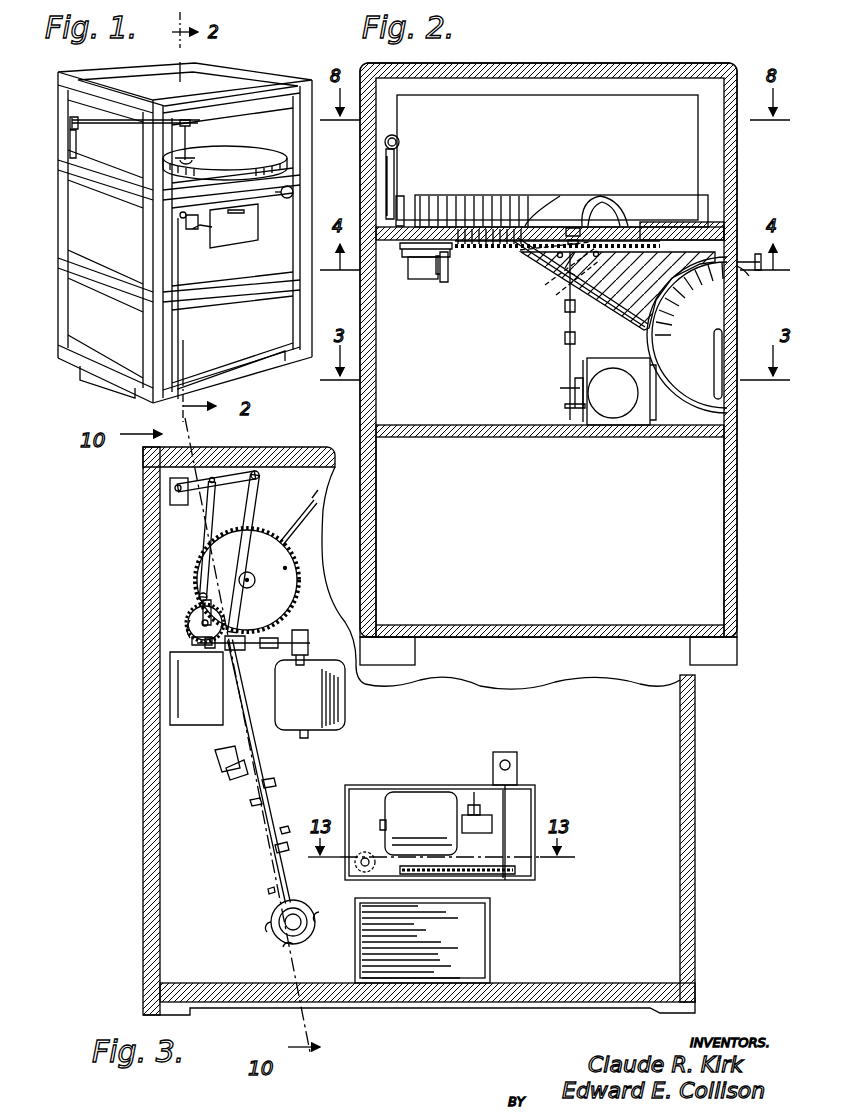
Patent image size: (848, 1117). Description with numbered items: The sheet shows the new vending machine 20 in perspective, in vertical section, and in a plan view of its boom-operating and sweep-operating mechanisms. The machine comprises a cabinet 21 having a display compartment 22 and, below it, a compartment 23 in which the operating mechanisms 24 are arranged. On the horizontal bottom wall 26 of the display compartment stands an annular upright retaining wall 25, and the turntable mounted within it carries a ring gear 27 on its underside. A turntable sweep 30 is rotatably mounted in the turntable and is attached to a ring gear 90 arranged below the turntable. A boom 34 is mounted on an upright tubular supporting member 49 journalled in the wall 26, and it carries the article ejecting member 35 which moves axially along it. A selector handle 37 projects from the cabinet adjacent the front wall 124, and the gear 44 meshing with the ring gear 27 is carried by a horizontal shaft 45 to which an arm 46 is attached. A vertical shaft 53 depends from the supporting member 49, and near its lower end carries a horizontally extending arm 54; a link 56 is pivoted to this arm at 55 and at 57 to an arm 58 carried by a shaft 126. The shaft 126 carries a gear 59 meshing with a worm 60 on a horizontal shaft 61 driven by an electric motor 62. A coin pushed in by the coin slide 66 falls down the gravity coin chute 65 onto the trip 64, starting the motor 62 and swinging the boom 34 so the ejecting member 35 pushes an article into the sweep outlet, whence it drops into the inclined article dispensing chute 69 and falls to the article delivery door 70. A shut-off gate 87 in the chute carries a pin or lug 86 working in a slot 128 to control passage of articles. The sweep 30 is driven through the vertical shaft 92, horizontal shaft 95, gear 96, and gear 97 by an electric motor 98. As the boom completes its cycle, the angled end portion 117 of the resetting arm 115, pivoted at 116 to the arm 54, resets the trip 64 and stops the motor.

In FIG. 1, the vending machine 20 is at (262, 358).
In FIG. 1, the cabinet 21 is at (218, 345).
In FIG. 2, the cabinet 21 is at (740, 496).
In FIG. 3, the cabinet 21 is at (419, 731).
In FIG. 2, the display compartment 22 is at (690, 150).
In FIG. 2, the compartment 23 is at (536, 418).
In FIG. 2, the operating mechanisms 24 is at (566, 345).
In FIG. 1, the annular upright retaining wall 25 is at (240, 165).
In FIG. 2, the annular upright retaining wall 25 is at (498, 196).
In FIG. 2, the horizontal bottom wall 26 is at (725, 222).
In FIG. 2, the ring gear 27 is at (503, 248).
In FIG. 2, the turntable sweep 30 is at (575, 190).
In FIG. 1, the boom 34 is at (112, 128).
In FIG. 2, the boom 34 is at (400, 142).
In FIG. 1, the article ejecting member 35 is at (194, 134).
In FIG. 2, the article ejecting member 35 is at (396, 178).
In FIG. 1, the selector handle 37 is at (294, 192).
In FIG. 2, the selector handle 37 is at (745, 272).
In FIG. 2, the gear 44 is at (452, 282).
In FIG. 2, the horizontal shaft 45 is at (430, 280).
In FIG. 2, the arm 46 is at (408, 262).
In FIG. 1, the upright tubular supporting member 49 is at (68, 148).
In FIG. 3, the vertical shaft 53 is at (175, 492).
In FIG. 3, the horizontally extending arm 54 is at (262, 470).
In FIG. 3, the pivot 55 is at (262, 476).
In FIG. 3, the link 56 is at (278, 518).
In FIG. 3, the pivot 57 is at (200, 594).
In FIG. 3, the arm 58 is at (200, 616).
In FIG. 3, the gear 59 is at (195, 641).
In FIG. 3, the worm 60 is at (212, 646).
In FIG. 3, the horizontal shaft 61 is at (252, 650).
In FIG. 3, the electric motor 62 is at (345, 718).
In FIG. 3, the trip 64 is at (292, 895).
In FIG. 3, the gravity coin chute 65 is at (302, 928).
In FIG. 1, the coin slide 66 is at (202, 232).
In FIG. 2, the inclined article dispensing chute 69 is at (600, 292).
In FIG. 1, the article delivery door 70 is at (248, 228).
In FIG. 2, the article delivery door 70 is at (655, 383).
In FIG. 2, the pin or lug 86 is at (545, 260).
In FIG. 2, the shut-off gate 87 is at (570, 272).
In FIG. 2, the ring gear 90 is at (598, 236).
In FIG. 2, the vertical shaft 92 is at (572, 358).
In FIG. 3, the vertical shaft 92 is at (508, 752).
In FIG. 3, the horizontal shaft 95 is at (512, 812).
In FIG. 3, the gear 96 is at (530, 783).
In FIG. 3, the gear 97 is at (474, 790).
In FIG. 2, the electric motor 98 is at (618, 410).
In FIG. 3, the electric motor 98 is at (408, 808).
In FIG. 3, the resetting arm 115 is at (200, 518).
In FIG. 3, the pivot 116 is at (214, 478).
In FIG. 3, the angled end portion 117 is at (275, 890).
In FIG. 1, the front wall 124 is at (313, 312).
In FIG. 2, the front wall 124 is at (740, 545).
In FIG. 3, the shaft 126 is at (188, 628).
In FIG. 2, the slot 128 is at (724, 336).